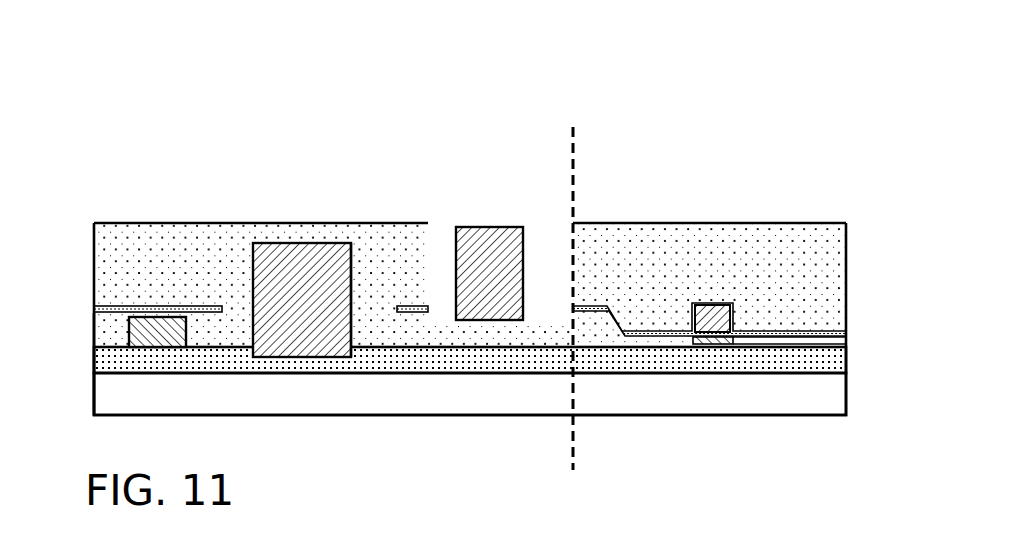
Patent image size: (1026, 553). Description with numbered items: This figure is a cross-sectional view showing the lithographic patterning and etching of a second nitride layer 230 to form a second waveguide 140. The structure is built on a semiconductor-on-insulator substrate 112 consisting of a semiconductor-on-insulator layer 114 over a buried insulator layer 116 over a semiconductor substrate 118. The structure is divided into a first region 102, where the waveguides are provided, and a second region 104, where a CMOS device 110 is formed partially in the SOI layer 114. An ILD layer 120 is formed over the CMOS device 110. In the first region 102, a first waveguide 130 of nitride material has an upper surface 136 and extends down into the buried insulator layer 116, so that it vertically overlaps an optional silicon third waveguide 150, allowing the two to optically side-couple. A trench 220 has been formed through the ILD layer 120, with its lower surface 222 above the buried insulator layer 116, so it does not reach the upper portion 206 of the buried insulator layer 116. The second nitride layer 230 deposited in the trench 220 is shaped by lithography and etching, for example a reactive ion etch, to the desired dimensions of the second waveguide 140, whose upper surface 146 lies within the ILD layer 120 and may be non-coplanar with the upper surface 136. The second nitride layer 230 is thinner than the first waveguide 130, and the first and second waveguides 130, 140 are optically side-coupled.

The first region 102 is at (572, 97).
The second region 104 is at (573, 97).
The CMOS device 110 is at (732, 308).
The semiconductor-on-insulator substrate 112 is at (85, 313).
The semiconductor-on-insulator layer 114 is at (846, 338).
The buried insulator layer 116 is at (822, 352).
The semiconductor substrate 118 is at (822, 400).
The ILD layer 120 is at (113, 275).
The first waveguide 130 is at (270, 243).
The upper surface of first waveguide 136 is at (330, 243).
The second waveguide 140 is at (472, 223).
The upper surface of second waveguide 146 is at (490, 227).
The third waveguide 150 is at (157, 347).
The upper portion of buried insulator layer 206 is at (393, 347).
The trench 220 is at (430, 243).
The lower surface of second trench 222 is at (532, 324).
The second nitride layer 230 is at (500, 292).